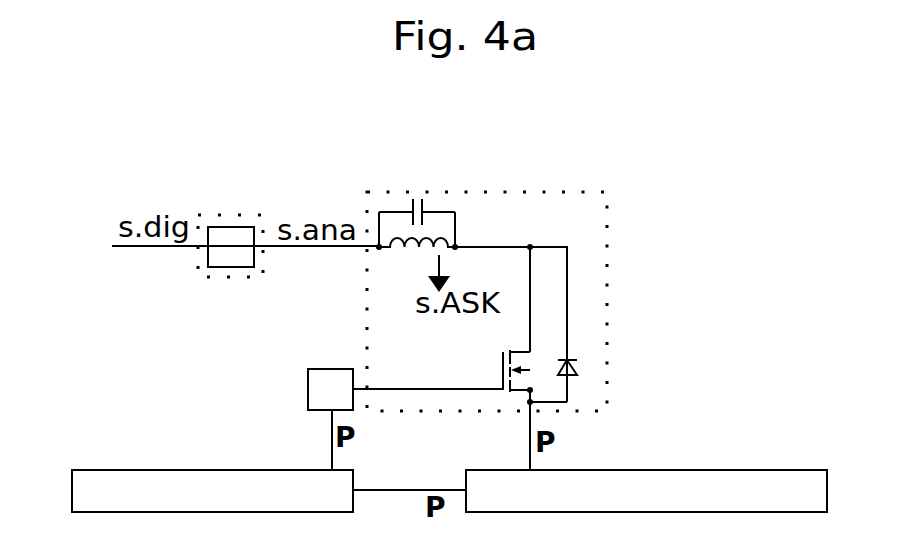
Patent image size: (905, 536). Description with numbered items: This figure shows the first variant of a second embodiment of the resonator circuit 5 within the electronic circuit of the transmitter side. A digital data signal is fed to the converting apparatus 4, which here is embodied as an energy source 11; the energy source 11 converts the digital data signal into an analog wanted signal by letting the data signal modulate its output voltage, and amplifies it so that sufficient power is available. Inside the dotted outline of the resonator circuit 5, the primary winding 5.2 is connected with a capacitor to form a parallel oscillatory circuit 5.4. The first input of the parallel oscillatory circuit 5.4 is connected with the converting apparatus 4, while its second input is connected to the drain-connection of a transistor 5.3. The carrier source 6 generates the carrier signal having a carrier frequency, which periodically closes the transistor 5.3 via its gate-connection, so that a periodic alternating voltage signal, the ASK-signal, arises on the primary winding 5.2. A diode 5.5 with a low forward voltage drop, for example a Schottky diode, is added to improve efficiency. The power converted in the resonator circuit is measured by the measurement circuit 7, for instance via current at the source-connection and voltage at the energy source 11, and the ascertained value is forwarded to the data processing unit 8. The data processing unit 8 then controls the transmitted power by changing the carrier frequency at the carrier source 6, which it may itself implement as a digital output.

The converting apparatus 4 is at (222, 292).
The energy source 11 is at (229, 246).
The resonator circuit 5 is at (632, 268).
The parallel oscillatory circuit 5.4 is at (472, 216).
The primary winding 5.2 is at (361, 296).
The transistor 5.3 is at (505, 398).
The diode 5.5 is at (589, 371).
The carrier source 6 is at (320, 392).
The measurement circuit 7 is at (646, 491).
The data processing unit 8 is at (200, 491).